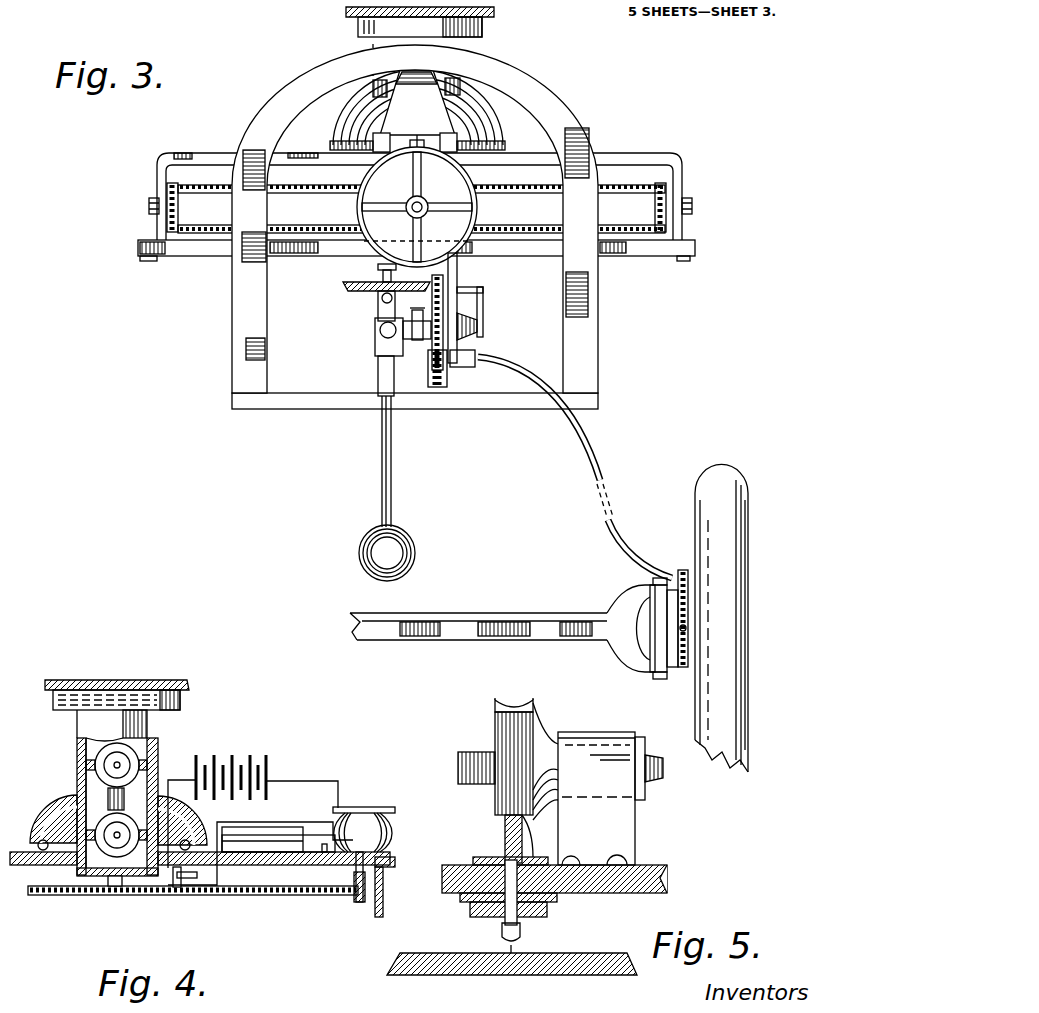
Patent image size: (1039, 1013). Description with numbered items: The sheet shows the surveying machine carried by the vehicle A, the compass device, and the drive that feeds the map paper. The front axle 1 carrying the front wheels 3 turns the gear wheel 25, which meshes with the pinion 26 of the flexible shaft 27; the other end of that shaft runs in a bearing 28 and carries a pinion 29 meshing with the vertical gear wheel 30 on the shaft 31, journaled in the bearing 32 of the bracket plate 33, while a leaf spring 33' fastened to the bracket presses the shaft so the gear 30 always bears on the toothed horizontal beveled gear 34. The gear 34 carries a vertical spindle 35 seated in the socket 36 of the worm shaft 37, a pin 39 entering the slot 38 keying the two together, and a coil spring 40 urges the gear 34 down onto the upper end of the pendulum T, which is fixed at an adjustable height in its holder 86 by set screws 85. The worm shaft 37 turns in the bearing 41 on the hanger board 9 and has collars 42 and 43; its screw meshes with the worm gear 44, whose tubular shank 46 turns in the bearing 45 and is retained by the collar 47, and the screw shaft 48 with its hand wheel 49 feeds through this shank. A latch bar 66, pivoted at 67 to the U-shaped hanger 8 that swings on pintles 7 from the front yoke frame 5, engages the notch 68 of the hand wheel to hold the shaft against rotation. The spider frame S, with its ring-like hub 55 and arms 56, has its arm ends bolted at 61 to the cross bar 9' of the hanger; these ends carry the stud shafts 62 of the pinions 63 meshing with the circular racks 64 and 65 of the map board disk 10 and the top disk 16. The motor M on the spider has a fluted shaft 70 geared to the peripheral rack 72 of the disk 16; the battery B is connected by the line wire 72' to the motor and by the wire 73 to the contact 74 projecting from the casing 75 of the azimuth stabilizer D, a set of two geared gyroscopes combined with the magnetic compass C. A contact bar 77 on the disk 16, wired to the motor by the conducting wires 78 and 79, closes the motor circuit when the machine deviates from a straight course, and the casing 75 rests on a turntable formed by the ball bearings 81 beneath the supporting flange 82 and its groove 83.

In FIG. 3, the front axle 1 is at (498, 612).
In FIG. 3, the front wheels 3 is at (695, 518).
In FIG. 3, the front yoke frame 5 is at (238, 362).
In FIG. 3, the pintles 7 is at (378, 82).
In FIG. 3, the U-shaped hanger 8 is at (418, 98).
In FIG. 3, the hanger board 9 is at (635, 282).
In FIG. 5, the hanger board 9 is at (574, 880).
In FIG. 3, the cross bar 9' is at (176, 302).
In FIG. 3, the map board disk 10 is at (228, 233).
In FIG. 3, the top disk board 16 is at (214, 185).
In FIG. 4, the top disk board 16 is at (82, 896).
In FIG. 3, the gear wheel 25 is at (688, 602).
In FIG. 3, the pinion 26 is at (680, 572).
In FIG. 3, the flexible shaft 27 is at (614, 548).
In FIG. 3, the bearing 28 is at (470, 370).
In FIG. 3, the pinion 29 is at (430, 388).
In FIG. 3, the vertical gear wheel 30 is at (440, 375).
In FIG. 3, the shaft 31 is at (480, 352).
In FIG. 3, the bearing 32 is at (478, 322).
In FIG. 3, the bracket plate 33 is at (486, 308).
In FIG. 3, the leaf spring 33' is at (516, 312).
In FIG. 3, the beveled gear 34 is at (350, 290).
In FIG. 5, the beveled gear 34 is at (548, 975).
In FIG. 3, the vertical spindle 35 is at (384, 296).
In FIG. 5, the vertical spindle 35 is at (520, 926).
In FIG. 5, the socket 36 is at (500, 850).
In FIG. 5, the worm shaft 37 is at (540, 735).
In FIG. 5, the slot 38 is at (506, 920).
In FIG. 5, the pin 39 is at (478, 912).
In FIG. 5, the coil spring 40 is at (530, 842).
In FIG. 5, the bearing 41 is at (462, 897).
In FIG. 5, the collar 42 is at (478, 860).
In FIG. 3, the collar 43 is at (385, 268).
In FIG. 5, the collar 43 is at (503, 912).
In FIG. 5, the worm gear 44 is at (516, 702).
In FIG. 5, the bearing 45 is at (620, 816).
In FIG. 5, the tubular shank 46 is at (560, 745).
In FIG. 5, the collar 47 is at (640, 737).
In FIG. 3, the screw shaft 48 is at (405, 207).
In FIG. 3, the hand wheel 49 is at (480, 208).
In FIG. 3, the ring-like hub 55 is at (336, 146).
In FIG. 4, the ring-like hub 55 is at (38, 852).
In FIG. 3, the spider arms 56 is at (236, 153).
In FIG. 3, the bolting point 61 is at (140, 246).
In FIG. 3, the stud shafts 62 is at (160, 210).
In FIG. 3, the gear pinions 63 is at (182, 212).
In FIG. 3, the circular rack 64 is at (192, 218).
In FIG. 3, the circular rack 65 is at (168, 196).
In FIG. 3, the latch bar 66 is at (428, 140).
In FIG. 3, the pivot 67 is at (410, 140).
In FIG. 3, the notch 68 is at (417, 160).
In FIG. 4, the motor shaft 70 is at (370, 900).
In FIG. 4, the peripheral rack 72 is at (338, 896).
In FIG. 4, the line wire 72' is at (307, 770).
In FIG. 4, the wire 73 is at (182, 775).
In FIG. 4, the contact 74 is at (166, 888).
In FIG. 3, the casing 75 is at (384, 70).
In FIG. 4, the casing 75 is at (78, 776).
In FIG. 4, the contact bar 77 is at (190, 885).
In FIG. 4, the conducting wire 78 is at (300, 827).
In FIG. 4, the conducting wire 79 is at (266, 827).
In FIG. 3, the ball bearings 81 is at (360, 136).
In FIG. 4, the ball bearings 81 is at (192, 842).
In FIG. 3, the supporting flange 82 is at (492, 118).
In FIG. 4, the supporting flange 82 is at (68, 818).
In FIG. 4, the groove 83 is at (187, 838).
In FIG. 3, the set screws 85 is at (380, 332).
In FIG. 3, the holder 86 is at (383, 350).
In FIG. 3, the vehicle A is at (600, 388).
In FIG. 4, the battery B is at (233, 760).
In FIG. 3, the magnetic compass C is at (356, 26).
In FIG. 4, the magnetic compass C is at (185, 690).
In FIG. 3, the azimuth stabilizer D is at (458, 96).
In FIG. 4, the azimuth stabilizer D is at (77, 752).
In FIG. 4, the motor M is at (372, 807).
In FIG. 3, the spider frame S is at (625, 153).
In FIG. 4, the spider frame S is at (272, 868).
In FIG. 3, the pendulum T is at (360, 548).